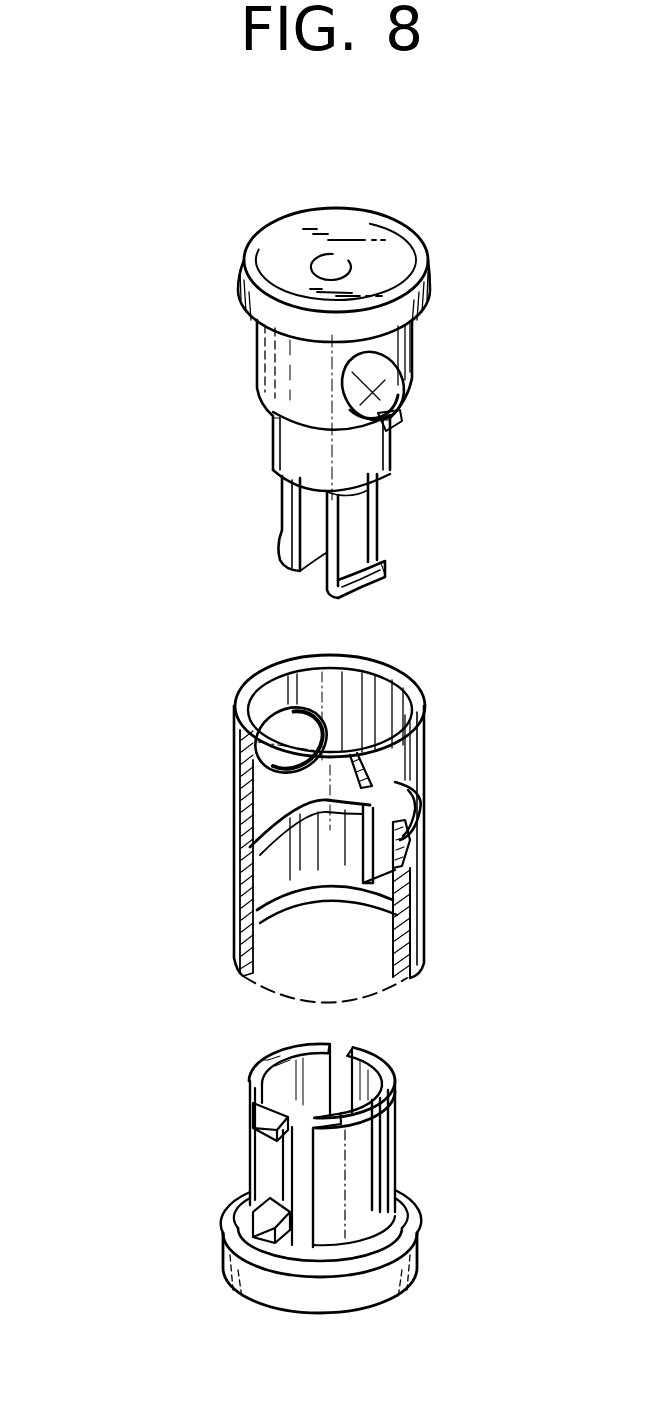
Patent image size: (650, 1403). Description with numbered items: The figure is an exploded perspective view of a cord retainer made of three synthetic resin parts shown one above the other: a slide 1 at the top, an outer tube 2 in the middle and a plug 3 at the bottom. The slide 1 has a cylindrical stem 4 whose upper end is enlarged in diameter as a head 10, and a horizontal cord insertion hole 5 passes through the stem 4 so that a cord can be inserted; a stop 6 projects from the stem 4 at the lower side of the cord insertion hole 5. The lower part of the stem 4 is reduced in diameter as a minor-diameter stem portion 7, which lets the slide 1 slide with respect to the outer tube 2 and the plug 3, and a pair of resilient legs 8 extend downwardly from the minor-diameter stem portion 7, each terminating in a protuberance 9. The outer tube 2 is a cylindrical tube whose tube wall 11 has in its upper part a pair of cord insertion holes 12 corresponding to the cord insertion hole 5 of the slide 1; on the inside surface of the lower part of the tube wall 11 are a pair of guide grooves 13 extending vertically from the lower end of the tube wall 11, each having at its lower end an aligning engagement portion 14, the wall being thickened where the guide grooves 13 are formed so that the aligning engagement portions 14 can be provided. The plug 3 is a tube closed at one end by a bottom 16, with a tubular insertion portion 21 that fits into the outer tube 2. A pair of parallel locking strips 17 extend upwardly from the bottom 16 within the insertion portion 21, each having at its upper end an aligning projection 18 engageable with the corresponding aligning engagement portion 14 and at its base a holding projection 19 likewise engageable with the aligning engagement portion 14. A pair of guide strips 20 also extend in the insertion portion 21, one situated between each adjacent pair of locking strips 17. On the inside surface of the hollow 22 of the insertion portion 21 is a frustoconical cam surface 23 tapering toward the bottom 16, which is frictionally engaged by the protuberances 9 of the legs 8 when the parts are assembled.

The slide 1 is at (233, 337).
The outer tube 2 is at (210, 838).
The plug 3 is at (230, 1128).
The cylindrical stem 4 is at (392, 337).
The cord insertion hole 5 is at (375, 388).
The stop 6 is at (398, 417).
The minor-diameter stem portion 7 is at (292, 450).
The resilient legs 8 is at (358, 520).
The protuberance 9 is at (367, 580).
The head 10 is at (283, 252).
The tube wall 11 is at (403, 762).
The cord insertion holes 12 is at (283, 725).
The guide grooves 13 is at (423, 882).
The aligning engagement portion 14 is at (423, 922).
The bottom 16 is at (338, 1302).
The locking strips 17 is at (372, 1063).
The aligning projection 18 is at (270, 1127).
The holding projection 19 is at (262, 1228).
The guide strips 20 is at (372, 1144).
The insertion portion 21 is at (357, 1210).
The hollow 22 is at (290, 1085).
The frustoconical cam surface 23 is at (300, 1182).